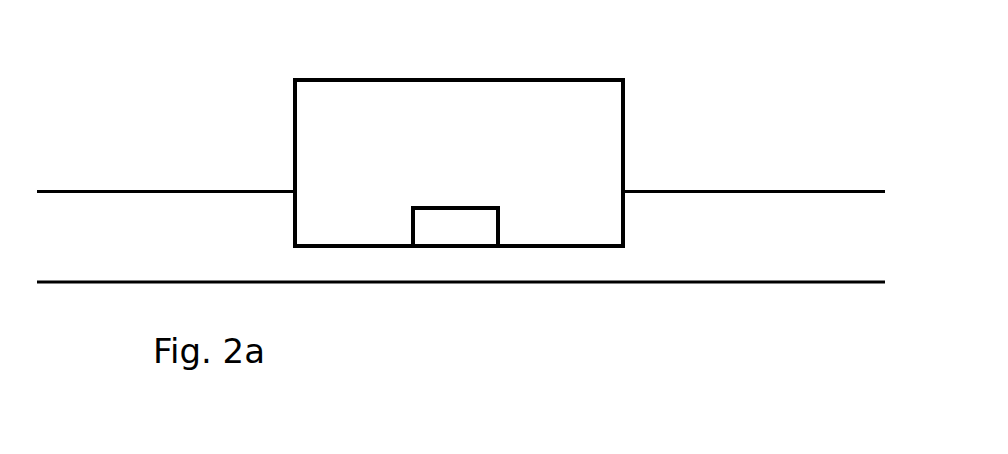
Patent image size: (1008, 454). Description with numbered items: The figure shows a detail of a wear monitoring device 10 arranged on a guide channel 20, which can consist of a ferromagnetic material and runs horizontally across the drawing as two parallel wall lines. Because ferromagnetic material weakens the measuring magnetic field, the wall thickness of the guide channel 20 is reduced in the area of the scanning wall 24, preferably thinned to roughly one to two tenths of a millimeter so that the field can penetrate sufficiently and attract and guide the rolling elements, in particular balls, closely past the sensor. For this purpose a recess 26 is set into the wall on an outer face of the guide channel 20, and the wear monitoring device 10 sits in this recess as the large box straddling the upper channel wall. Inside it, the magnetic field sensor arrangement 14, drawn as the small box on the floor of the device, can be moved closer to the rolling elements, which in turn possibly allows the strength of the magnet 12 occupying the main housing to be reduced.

The wear monitoring device 10 is at (638, 167).
The magnet 12 is at (385, 117).
The magnetic field sensor arrangement 14 is at (433, 232).
The guide channel 20 is at (743, 210).
The scanning wall 24 is at (460, 268).
The recess 26 is at (621, 212).